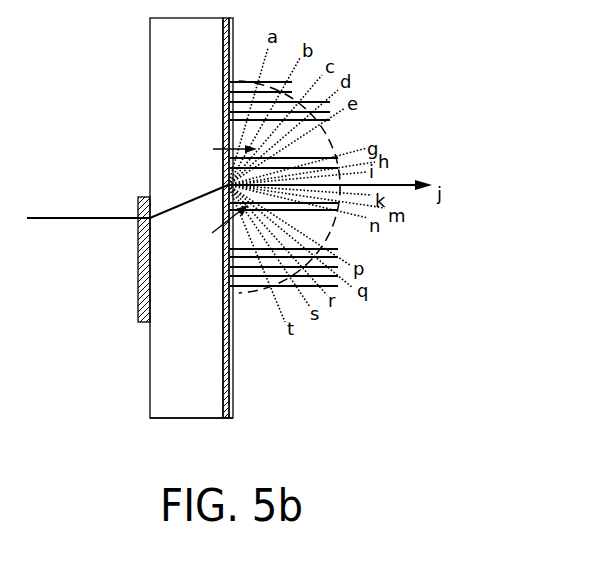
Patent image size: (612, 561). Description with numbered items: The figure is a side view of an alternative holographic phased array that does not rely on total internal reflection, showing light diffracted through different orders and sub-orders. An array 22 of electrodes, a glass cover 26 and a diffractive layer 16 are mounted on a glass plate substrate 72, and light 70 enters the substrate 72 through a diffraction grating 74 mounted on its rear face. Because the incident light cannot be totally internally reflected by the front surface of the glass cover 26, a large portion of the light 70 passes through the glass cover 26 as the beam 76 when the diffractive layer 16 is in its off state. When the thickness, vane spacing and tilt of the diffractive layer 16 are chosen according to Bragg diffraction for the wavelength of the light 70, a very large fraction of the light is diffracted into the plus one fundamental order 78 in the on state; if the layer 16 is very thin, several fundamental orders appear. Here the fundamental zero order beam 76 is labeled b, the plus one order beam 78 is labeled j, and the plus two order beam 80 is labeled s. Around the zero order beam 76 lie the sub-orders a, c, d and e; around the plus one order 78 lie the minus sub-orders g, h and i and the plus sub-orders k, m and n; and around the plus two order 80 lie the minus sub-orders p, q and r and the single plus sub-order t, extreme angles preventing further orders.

The diffractive layer 16 is at (230, 418).
The array of electrodes 22 is at (229, 384).
The glass cover 26 is at (233, 343).
The light 70 is at (88, 218).
The glass plate substrate 72 is at (150, 128).
The diffraction grating 74 is at (138, 284).
The beam 76 is at (222, 151).
The +1 fundamental order 78 is at (408, 182).
The fundamental plus two order diffracted beam 80 is at (217, 226).